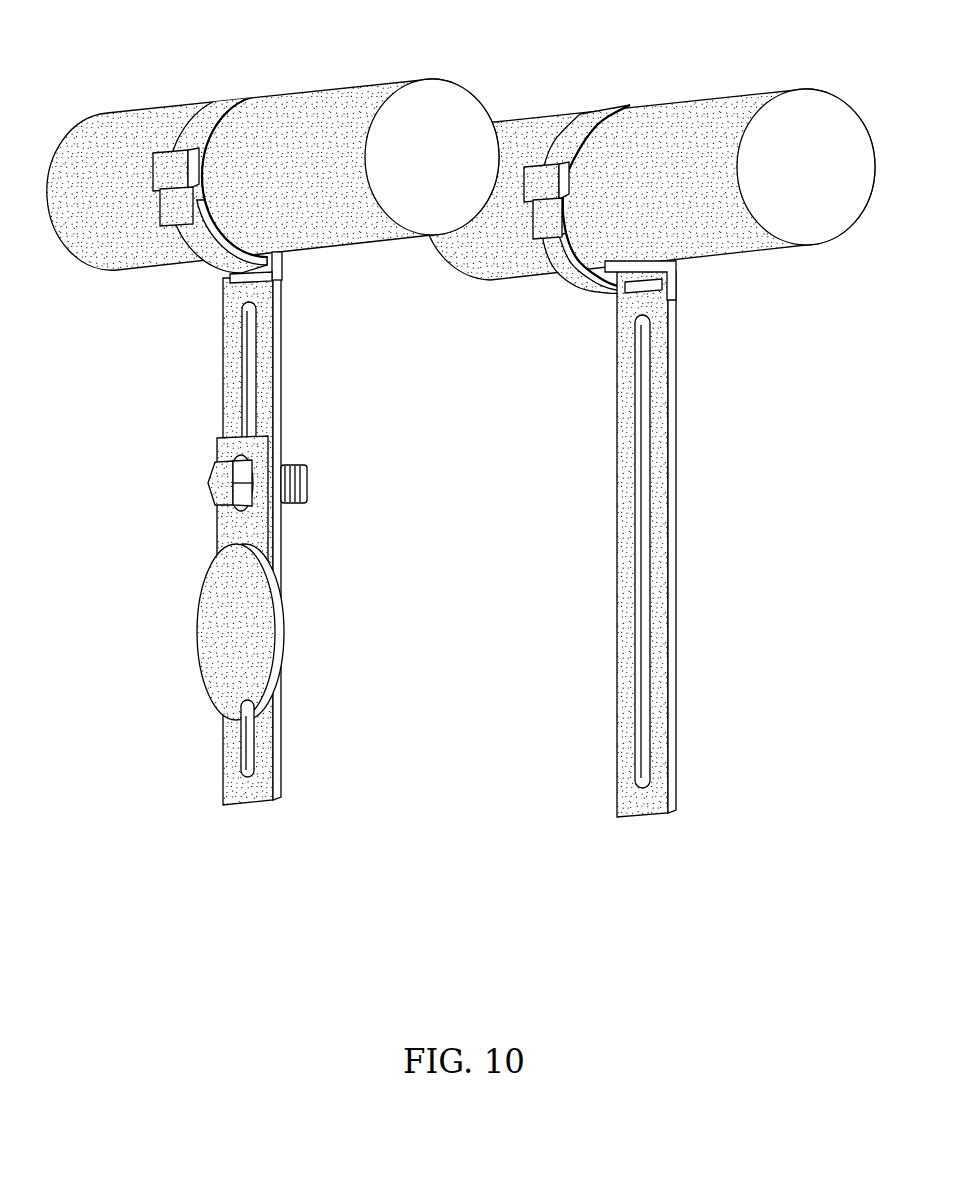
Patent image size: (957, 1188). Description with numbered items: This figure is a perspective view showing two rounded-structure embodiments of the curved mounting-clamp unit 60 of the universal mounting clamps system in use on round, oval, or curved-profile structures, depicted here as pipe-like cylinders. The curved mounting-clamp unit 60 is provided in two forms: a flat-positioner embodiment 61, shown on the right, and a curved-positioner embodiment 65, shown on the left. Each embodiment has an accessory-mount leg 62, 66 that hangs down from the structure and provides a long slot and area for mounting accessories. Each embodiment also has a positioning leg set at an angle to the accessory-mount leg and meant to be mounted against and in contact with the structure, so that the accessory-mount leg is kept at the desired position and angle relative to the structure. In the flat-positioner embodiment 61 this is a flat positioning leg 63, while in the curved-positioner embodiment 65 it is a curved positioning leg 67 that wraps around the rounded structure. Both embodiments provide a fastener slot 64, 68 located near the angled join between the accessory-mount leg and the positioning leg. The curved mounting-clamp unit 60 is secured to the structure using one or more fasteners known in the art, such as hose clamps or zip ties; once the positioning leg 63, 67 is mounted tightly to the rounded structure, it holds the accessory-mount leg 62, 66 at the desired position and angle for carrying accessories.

The curved mounting-clamp unit 60 is at (544, 25).
The flat-positioner embodiment 61 is at (626, 461).
The accessory-mount leg 62 is at (673, 384).
The flat positioning leg 63 is at (630, 262).
The fastener slot 64 is at (664, 289).
The curved-positioner embodiment 65 is at (242, 450).
The accessory-mount leg 66 is at (278, 377).
The curved positioning leg 67 is at (232, 238).
The fastener slot 68 is at (272, 279).